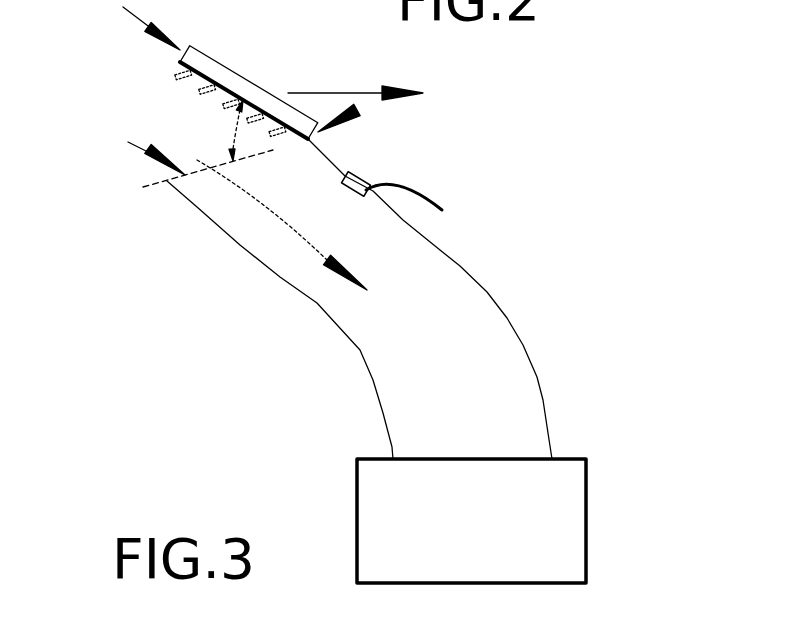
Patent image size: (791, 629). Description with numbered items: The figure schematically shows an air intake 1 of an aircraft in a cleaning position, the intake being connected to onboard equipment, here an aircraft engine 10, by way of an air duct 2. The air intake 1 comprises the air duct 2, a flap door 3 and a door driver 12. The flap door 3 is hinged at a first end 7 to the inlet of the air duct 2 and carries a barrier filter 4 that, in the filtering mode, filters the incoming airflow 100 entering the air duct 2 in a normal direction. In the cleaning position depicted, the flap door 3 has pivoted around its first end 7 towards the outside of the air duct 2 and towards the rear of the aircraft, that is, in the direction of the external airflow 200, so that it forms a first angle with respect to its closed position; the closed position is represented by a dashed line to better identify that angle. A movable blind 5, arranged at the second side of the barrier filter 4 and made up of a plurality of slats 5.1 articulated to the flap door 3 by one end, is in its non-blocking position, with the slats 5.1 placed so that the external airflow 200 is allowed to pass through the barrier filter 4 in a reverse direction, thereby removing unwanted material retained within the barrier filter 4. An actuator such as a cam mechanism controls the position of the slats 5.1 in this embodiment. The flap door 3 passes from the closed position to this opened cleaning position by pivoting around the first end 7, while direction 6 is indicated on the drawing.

The air intake 1 is at (597, 292).
The air duct 2 is at (455, 270).
The flap door 3 is at (123, 7).
The barrier filter 4 is at (196, 78).
The movable blind 5 is at (208, 62).
The slats 5.1 is at (205, 92).
The flow direction at inlet 6 is at (128, 142).
The first end 7 is at (357, 110).
The aircraft engine 10 is at (587, 492).
The door driver 12 is at (416, 201).
The incoming airflow 100 is at (282, 225).
The external airflow 200 is at (355, 75).